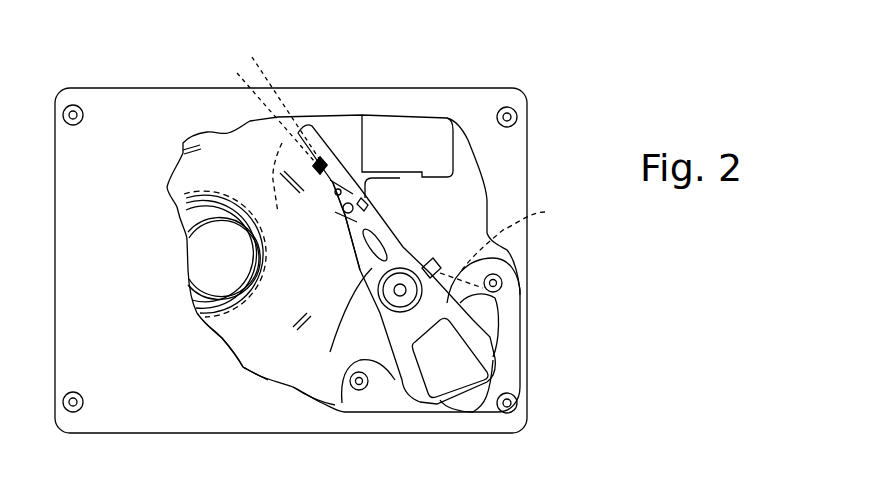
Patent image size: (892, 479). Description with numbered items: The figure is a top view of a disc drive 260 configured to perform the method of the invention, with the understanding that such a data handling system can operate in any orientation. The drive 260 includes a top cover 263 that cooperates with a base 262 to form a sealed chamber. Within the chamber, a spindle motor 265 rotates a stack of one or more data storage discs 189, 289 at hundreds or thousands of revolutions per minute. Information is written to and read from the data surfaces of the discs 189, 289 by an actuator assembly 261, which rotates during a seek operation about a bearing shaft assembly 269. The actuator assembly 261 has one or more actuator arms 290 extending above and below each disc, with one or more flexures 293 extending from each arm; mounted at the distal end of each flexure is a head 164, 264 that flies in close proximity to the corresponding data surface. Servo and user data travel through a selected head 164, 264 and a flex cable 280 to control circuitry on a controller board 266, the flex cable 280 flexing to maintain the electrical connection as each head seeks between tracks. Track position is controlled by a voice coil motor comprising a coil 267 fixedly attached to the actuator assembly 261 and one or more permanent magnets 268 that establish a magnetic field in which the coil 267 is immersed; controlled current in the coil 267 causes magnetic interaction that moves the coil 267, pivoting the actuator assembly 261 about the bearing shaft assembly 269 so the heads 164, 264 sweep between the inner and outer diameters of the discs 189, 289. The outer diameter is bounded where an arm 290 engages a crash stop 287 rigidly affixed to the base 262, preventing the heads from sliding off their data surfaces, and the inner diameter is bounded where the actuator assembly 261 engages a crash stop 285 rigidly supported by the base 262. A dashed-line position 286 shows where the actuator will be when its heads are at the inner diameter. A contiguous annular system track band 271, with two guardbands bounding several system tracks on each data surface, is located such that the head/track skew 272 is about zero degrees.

The disc drive 260 is at (578, 88).
The base 262 is at (327, 133).
The top cover 263 is at (137, 127).
The head 164 is at (313, 163).
The head 264 is at (320, 165).
The spindle motor 265 is at (207, 257).
The controller board 266 is at (440, 125).
The coil 267 is at (487, 373).
The permanent magnets 268 is at (477, 307).
The bearing shaft assembly 269 is at (372, 269).
The actuator assembly 261 is at (400, 290).
The contiguous annular system track band 271 is at (240, 367).
The head/track skew 272 is at (277, 37).
The flex cable 280 is at (403, 247).
The crash stop 285 is at (478, 283).
The position 286 is at (510, 244).
The crash stop 287 is at (368, 205).
The data storage disc 289 is at (228, 332).
The actuator arm 290 is at (360, 250).
The flexure 293 is at (330, 182).
The data storage disc 189 is at (300, 380).